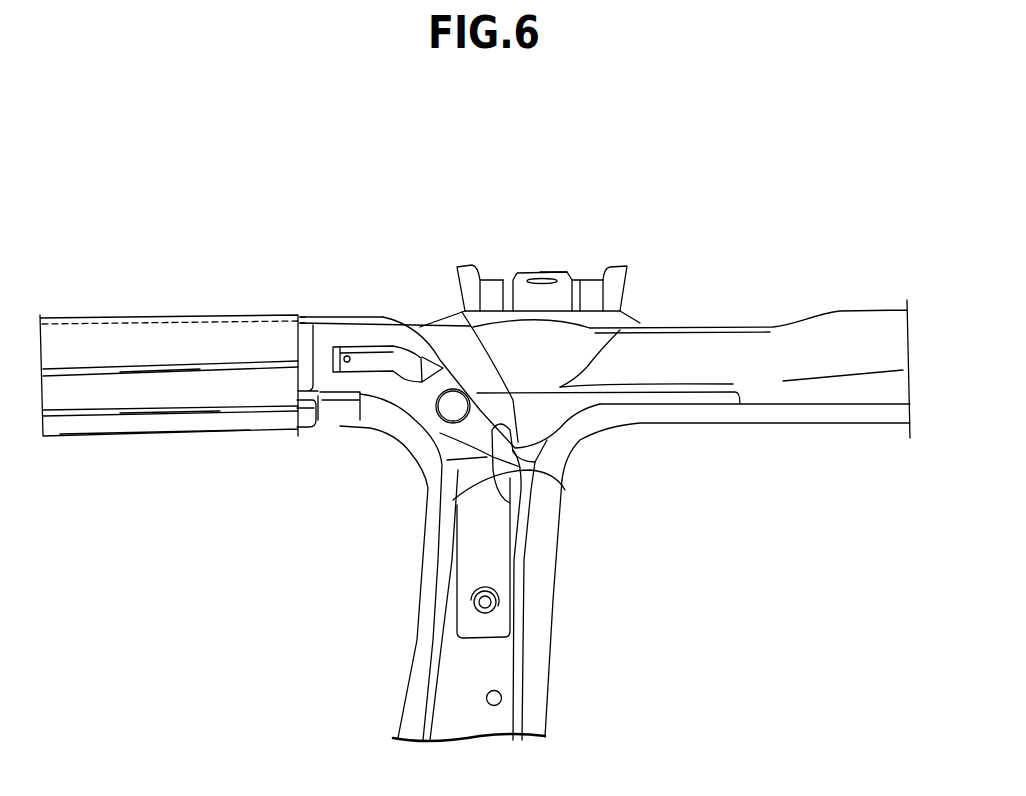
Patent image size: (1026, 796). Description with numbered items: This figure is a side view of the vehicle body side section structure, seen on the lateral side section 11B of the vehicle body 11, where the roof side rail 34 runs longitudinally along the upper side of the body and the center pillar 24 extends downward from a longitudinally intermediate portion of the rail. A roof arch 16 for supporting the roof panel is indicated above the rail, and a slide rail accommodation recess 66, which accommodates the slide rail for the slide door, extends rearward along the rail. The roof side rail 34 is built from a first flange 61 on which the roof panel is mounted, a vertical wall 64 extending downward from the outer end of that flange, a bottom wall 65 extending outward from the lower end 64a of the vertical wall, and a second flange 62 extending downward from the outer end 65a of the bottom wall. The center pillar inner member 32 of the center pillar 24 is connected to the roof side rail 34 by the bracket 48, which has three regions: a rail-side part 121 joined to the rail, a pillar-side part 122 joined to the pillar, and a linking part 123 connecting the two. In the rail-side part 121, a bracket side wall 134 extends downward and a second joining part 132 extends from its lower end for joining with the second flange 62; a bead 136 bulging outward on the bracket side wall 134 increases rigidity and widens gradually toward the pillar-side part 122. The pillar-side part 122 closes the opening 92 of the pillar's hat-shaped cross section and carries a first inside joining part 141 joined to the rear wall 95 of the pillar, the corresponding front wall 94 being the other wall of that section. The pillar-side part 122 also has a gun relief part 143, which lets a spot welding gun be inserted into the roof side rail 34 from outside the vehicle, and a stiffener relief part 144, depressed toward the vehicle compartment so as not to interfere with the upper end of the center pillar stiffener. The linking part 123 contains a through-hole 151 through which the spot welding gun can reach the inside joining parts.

The vehicle body 11 is at (262, 72).
The lateral side section 11B is at (315, 162).
The roof arch 16 is at (560, 297).
The center pillar 24 is at (565, 657).
The center pillar inner member 32 is at (547, 692).
The roof side rail 34 is at (70, 305).
The bracket 48 is at (717, 173).
The first flange 61 is at (222, 324).
The second flange 62 is at (120, 430).
The vertical wall 64 is at (150, 345).
The lower end 64a is at (185, 364).
The bottom wall 65 is at (86, 386).
The outer end 65a is at (176, 416).
The slide rail accommodation recess 66 is at (605, 380).
The opening 92 is at (456, 496).
The front wall 94 is at (434, 620).
The rear wall 95 is at (523, 623).
The rail-side part 121 is at (353, 318).
The pillar-side part 122 is at (603, 377).
The linking part 123 is at (452, 366).
The second joining part 132 is at (297, 420).
The bracket side wall 134 is at (383, 318).
The bead 136 is at (400, 348).
The first inside joining part 141 is at (600, 350).
The gun relief part 143 is at (480, 483).
The stiffener relief part 144 is at (473, 488).
The through-hole 151 is at (456, 386).